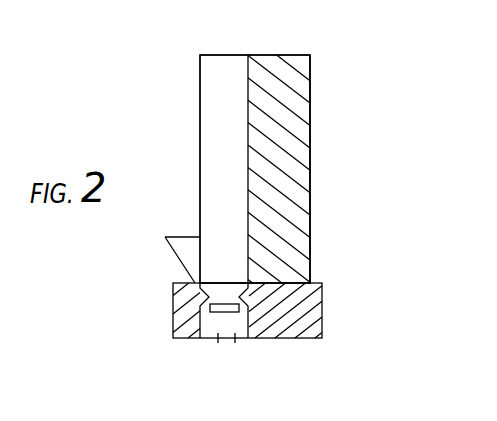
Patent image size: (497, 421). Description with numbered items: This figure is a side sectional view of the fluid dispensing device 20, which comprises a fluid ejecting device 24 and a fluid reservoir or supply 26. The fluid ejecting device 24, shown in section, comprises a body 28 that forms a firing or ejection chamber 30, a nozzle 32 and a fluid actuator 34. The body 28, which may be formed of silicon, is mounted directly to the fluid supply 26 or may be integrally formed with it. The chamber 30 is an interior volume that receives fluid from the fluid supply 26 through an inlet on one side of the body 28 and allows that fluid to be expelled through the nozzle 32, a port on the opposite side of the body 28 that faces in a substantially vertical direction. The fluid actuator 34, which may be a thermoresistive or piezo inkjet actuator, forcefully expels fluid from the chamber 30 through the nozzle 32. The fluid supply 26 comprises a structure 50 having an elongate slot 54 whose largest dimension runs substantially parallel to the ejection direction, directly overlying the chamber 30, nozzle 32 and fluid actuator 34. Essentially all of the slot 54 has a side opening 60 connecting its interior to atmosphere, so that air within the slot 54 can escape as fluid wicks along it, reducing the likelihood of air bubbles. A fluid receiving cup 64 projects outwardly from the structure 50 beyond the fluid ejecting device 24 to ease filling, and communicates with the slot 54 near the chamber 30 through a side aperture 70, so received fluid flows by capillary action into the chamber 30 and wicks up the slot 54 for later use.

The fluid dispensing device 20 is at (150, 77).
The fluid ejecting device 24 is at (323, 300).
The fluid supply 26 is at (312, 163).
The body 28 is at (322, 318).
The ejection chamber 30 is at (210, 327).
The nozzle 32 is at (227, 340).
The fluid actuator 34 is at (237, 313).
The structure 50 is at (298, 93).
The elongate slot 54 is at (215, 90).
The side opening 60 is at (200, 102).
The fluid receiving cup 64 is at (190, 237).
The side aperture 70 is at (200, 250).